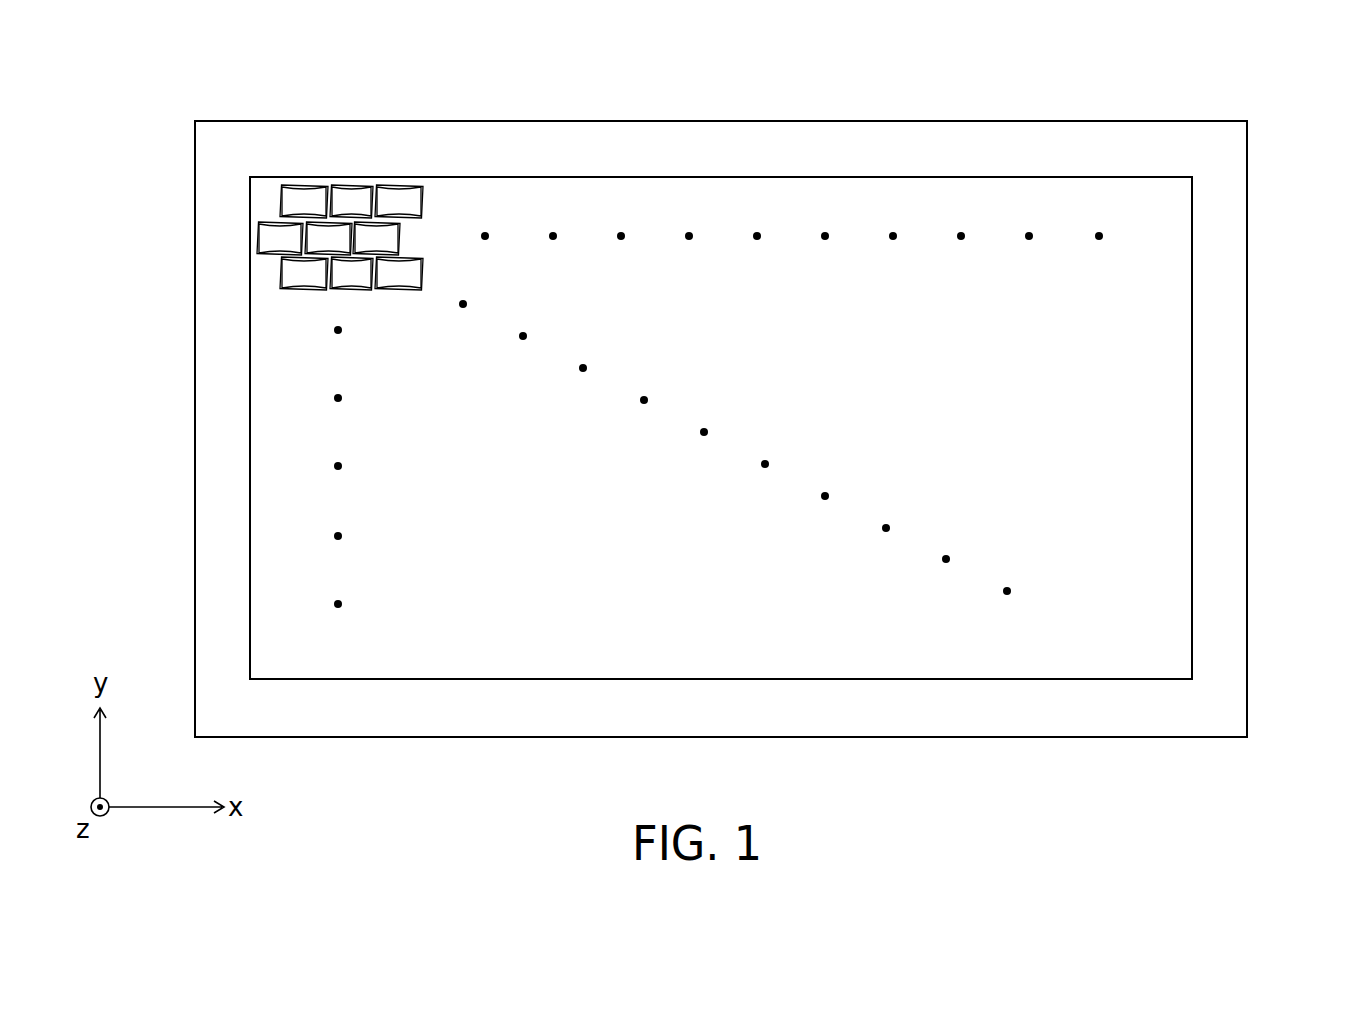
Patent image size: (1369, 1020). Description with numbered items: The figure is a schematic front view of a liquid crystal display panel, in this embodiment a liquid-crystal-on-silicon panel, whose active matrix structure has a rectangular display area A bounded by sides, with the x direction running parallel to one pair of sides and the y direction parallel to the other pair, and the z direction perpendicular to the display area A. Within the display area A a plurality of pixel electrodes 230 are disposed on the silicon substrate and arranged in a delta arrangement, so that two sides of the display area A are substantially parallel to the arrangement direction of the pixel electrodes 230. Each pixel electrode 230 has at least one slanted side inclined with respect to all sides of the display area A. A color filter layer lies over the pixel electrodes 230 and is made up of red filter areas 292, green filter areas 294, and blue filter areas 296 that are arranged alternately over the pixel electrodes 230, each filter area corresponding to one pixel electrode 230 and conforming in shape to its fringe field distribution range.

The pixel electrode 230 is at (347, 198).
The red filter area 292 is at (282, 196).
The green filter area 294 is at (355, 192).
The blue filter area 296 is at (423, 192).
The display area A is at (275, 541).